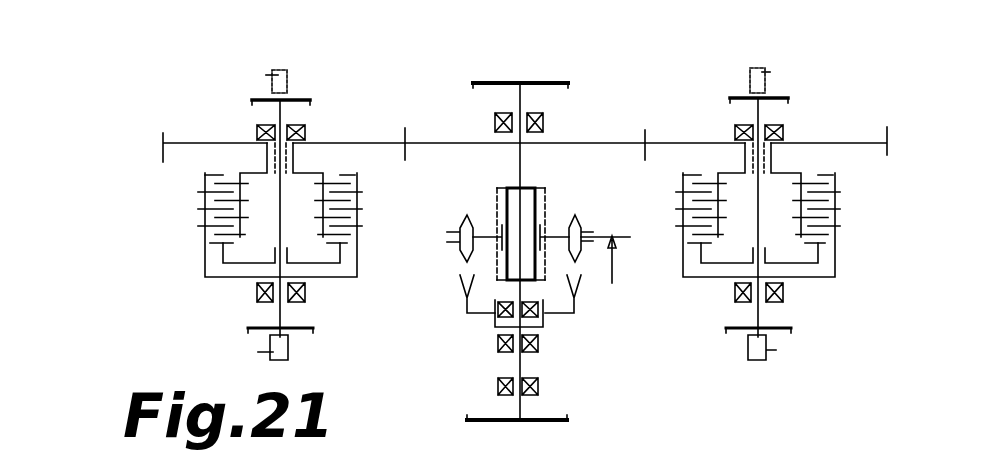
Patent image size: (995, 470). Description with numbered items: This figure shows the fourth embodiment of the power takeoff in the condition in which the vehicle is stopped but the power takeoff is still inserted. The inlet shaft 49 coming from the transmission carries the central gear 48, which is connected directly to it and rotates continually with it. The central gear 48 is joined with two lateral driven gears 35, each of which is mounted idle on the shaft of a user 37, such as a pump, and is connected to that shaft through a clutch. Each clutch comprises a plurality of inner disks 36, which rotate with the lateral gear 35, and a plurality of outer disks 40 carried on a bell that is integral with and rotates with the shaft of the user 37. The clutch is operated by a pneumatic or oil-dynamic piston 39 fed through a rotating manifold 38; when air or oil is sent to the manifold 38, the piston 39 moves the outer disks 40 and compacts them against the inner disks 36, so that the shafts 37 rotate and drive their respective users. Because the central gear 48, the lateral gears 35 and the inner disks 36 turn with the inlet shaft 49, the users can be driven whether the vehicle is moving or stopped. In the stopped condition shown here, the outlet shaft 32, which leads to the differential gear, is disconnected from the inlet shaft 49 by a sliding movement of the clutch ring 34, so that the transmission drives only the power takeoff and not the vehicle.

The outlet shaft 32 is at (510, 418).
The clutch ring 34 is at (468, 233).
The lateral driven gear 35 is at (233, 143).
The inner disks 36 is at (807, 183).
The shaft of a user 37 is at (273, 95).
The manifold 38 is at (757, 358).
The piston 39 is at (797, 265).
The outer disks 40 is at (838, 233).
The central gear 48 is at (572, 140).
The inlet shaft 49 is at (477, 85).